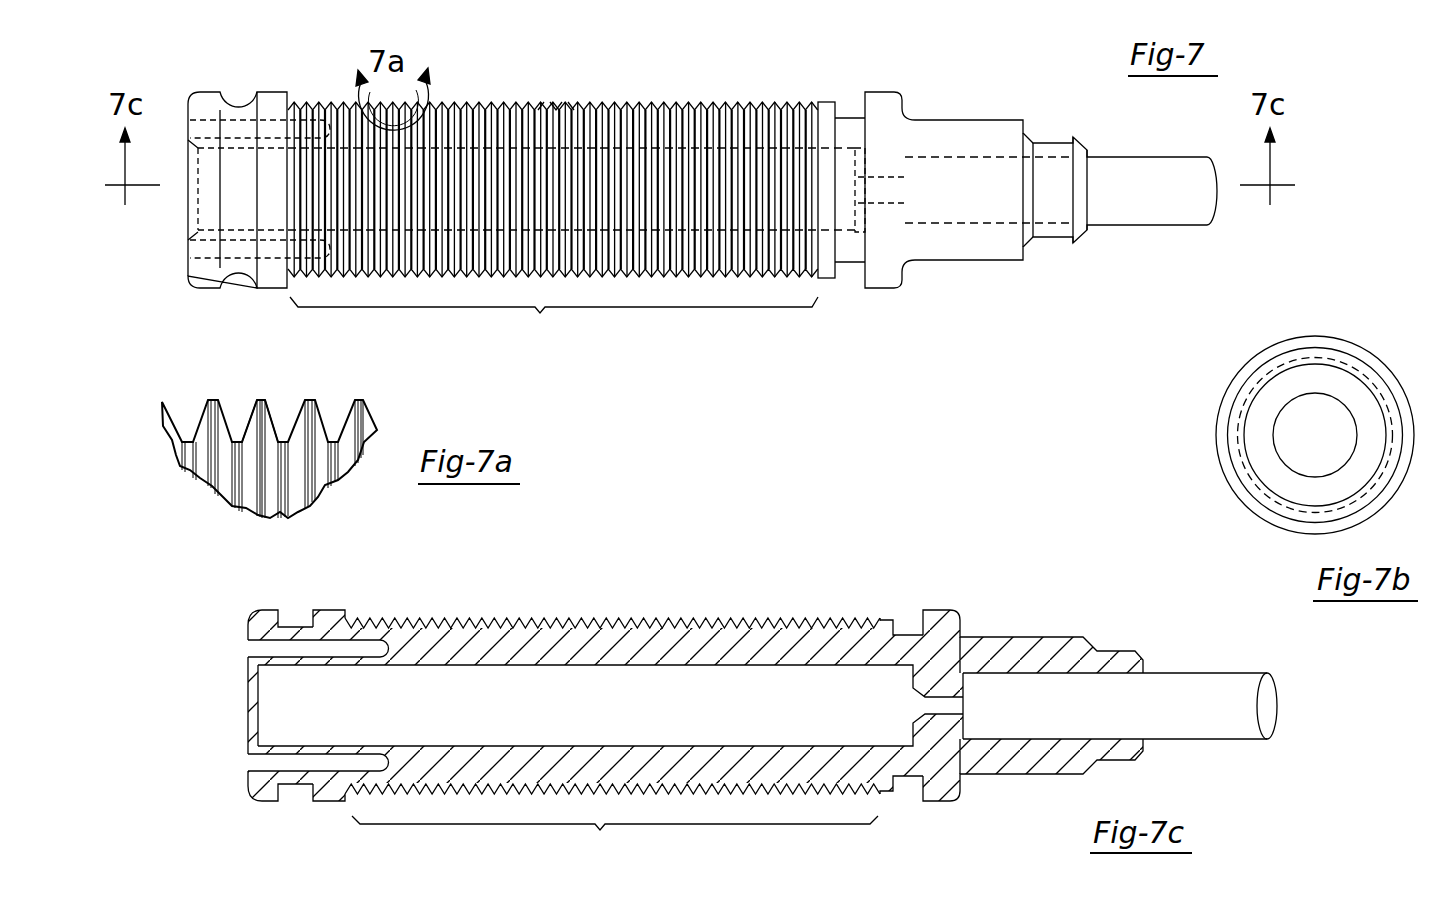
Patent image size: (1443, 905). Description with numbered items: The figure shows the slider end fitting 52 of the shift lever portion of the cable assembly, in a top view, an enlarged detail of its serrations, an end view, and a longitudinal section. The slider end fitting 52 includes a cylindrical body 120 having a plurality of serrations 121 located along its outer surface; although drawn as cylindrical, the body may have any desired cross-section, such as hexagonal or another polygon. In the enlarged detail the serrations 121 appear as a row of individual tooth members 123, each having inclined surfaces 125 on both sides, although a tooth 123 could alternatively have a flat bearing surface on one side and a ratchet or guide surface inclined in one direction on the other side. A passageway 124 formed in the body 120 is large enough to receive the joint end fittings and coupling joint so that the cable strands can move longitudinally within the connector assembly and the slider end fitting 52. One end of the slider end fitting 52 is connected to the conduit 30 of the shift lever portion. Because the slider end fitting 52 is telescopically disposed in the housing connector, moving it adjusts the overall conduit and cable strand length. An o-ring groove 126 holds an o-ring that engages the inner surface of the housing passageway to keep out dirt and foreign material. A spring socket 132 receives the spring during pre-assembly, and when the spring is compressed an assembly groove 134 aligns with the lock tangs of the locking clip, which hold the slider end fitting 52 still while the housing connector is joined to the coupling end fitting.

In FIG. 7C, the conduit 30 is at (1200, 703).
In FIG. 7, the slider end fitting 52 is at (893, 92).
In FIG. 7C, the slider end fitting 52 is at (655, 609).
In FIG. 7, the cylindrical body 120 is at (278, 92).
In FIG. 7B, the cylindrical body 120 is at (1236, 375).
In FIG. 7C, the cylindrical body 120 is at (333, 610).
In FIG. 7, the serrations 121 is at (571, 226).
In FIG. 7B, the serrations 121 is at (1385, 402).
In FIG. 7C, the serrations 121 is at (612, 744).
In FIG. 7, the tooth members 123 is at (556, 102).
In FIG. 7A, the tooth members 123 is at (260, 402).
In FIG. 7B, the passageway 124 is at (1315, 412).
In FIG. 7C, the passageway 124 is at (468, 718).
In FIG. 7, the inclined surfaces 125 is at (548, 101).
In FIG. 7A, the inclined surfaces 125 is at (248, 412).
In FIG. 7, the o-ring groove 126 is at (238, 108).
In FIG. 7C, the o-ring groove 126 is at (296, 626).
In FIG. 7, the spring socket 132 is at (240, 258).
In FIG. 7B, the spring socket 132 is at (1343, 366).
In FIG. 7C, the spring socket 132 is at (397, 628).
In FIG. 7, the assembly groove 134 is at (848, 288).
In FIG. 7C, the assembly groove 134 is at (912, 628).